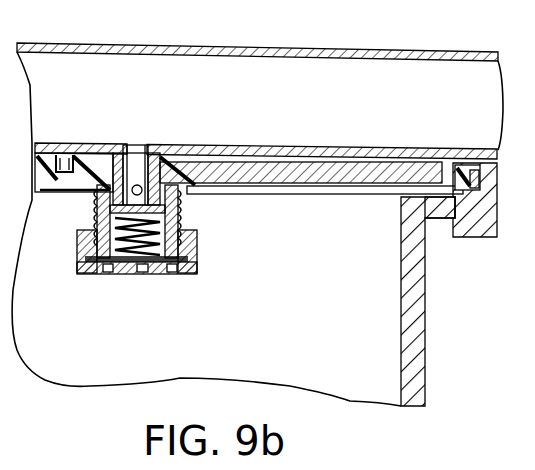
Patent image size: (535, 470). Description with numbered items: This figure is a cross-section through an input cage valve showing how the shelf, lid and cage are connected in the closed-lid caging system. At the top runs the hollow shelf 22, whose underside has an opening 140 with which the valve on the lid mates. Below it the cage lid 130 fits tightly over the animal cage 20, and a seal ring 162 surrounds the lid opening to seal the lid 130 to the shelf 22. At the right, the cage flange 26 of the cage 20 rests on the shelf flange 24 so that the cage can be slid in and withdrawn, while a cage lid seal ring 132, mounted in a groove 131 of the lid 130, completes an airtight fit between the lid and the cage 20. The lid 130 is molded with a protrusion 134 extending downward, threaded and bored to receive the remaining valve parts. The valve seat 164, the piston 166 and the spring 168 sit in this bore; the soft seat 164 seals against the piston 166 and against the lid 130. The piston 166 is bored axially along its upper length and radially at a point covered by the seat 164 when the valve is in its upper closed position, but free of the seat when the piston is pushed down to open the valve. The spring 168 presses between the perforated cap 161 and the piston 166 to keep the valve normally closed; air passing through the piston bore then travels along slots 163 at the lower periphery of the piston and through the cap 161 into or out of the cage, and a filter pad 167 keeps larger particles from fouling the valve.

The hollow shelf 22 is at (97, 43).
The cage lid 130 is at (259, 158).
The protrusion 134 is at (87, 217).
The seal ring 162 is at (62, 154).
The piston 166 is at (117, 143).
The opening 140 is at (133, 143).
The valve seat 164 is at (187, 200).
The spring 168 is at (193, 228).
The slots 163 is at (77, 243).
The cap 161 is at (197, 258).
The filter pad 167 is at (113, 275).
The animal cage 20 is at (425, 360).
The cage flange 26 is at (445, 208).
The shelf flange 24 is at (477, 237).
The groove 131 is at (430, 153).
The cage lid seal ring 132 is at (462, 155).